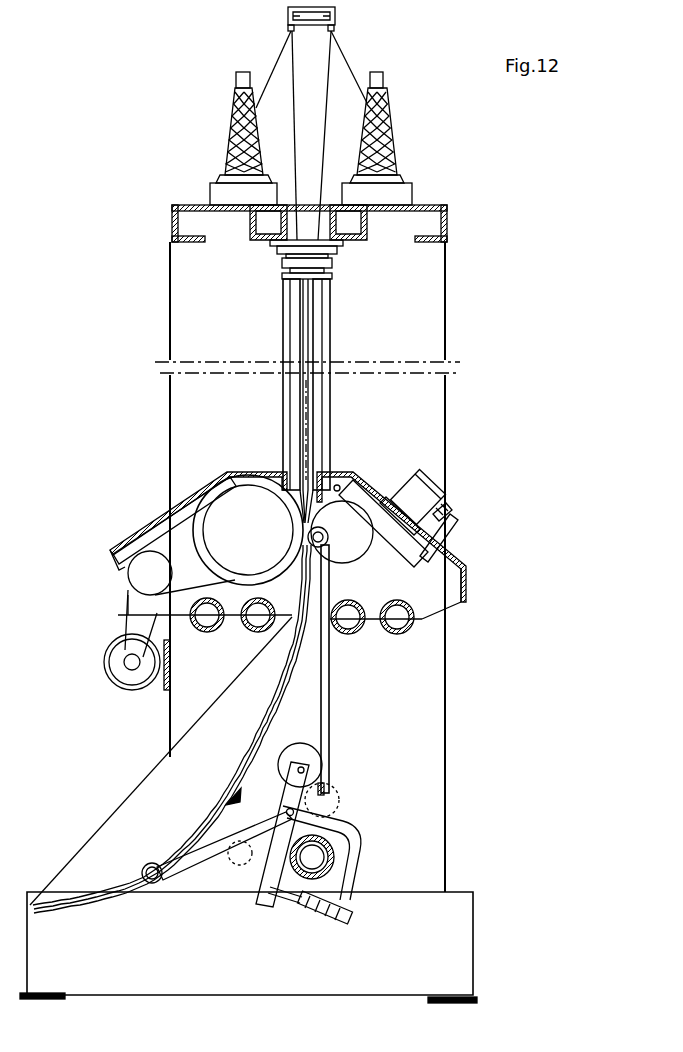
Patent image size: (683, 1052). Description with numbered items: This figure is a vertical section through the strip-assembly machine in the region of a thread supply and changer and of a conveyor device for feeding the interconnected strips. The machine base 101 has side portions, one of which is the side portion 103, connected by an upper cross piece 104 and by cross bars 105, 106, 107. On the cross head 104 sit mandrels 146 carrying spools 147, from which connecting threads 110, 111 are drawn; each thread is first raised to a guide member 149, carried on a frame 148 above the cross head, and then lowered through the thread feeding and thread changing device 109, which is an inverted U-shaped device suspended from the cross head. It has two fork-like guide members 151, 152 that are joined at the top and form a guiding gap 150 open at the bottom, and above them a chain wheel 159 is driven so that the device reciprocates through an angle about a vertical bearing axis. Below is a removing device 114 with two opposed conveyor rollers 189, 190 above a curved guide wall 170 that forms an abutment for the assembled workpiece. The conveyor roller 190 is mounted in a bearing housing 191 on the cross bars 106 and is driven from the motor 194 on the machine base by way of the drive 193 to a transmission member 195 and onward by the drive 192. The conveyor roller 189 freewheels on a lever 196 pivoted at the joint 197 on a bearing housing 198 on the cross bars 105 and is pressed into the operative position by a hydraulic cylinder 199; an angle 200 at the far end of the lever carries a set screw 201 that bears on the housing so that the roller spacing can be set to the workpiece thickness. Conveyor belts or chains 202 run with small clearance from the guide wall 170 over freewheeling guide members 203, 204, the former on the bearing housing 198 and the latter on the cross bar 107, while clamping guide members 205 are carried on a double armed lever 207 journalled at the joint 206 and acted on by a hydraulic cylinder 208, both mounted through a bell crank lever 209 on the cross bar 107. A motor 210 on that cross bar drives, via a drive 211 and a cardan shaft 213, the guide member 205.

The machine base 101 is at (452, 327).
The side portion 103 is at (430, 288).
The upper cross piece 104 is at (448, 226).
The cross bar 105 is at (396, 622).
The cross bar 106 is at (256, 620).
The cross bar 107 is at (335, 858).
The thread feeding and thread changing device 109 is at (340, 311).
The connecting thread 110 is at (293, 73).
The connecting thread 111 is at (331, 73).
The removing device 114 is at (470, 559).
The mandrel 146 is at (238, 80).
The spool 147 is at (228, 131).
The thread guide frame 148 is at (330, 7).
The guide member 149 is at (287, 27).
The guiding gap 150 is at (305, 410).
The guide member 151 is at (285, 346).
The guide member 152 is at (330, 351).
The chain wheel 159 is at (333, 263).
The guide wall 170 is at (182, 826).
The conveyor roller 189 is at (351, 514).
The conveyor roller 190 is at (250, 485).
The bearing housing 191 is at (200, 480).
The contact drive 192 is at (170, 535).
The contact drive 193 is at (125, 619).
The motor 194 is at (115, 660).
The transmission member 195 is at (143, 573).
The lever 196 is at (405, 560).
The joint 197 is at (338, 486).
The bearing housing 198 is at (468, 588).
The hydraulic cylinder 199 is at (425, 490).
The angle 200 is at (452, 540).
The set screw 201 is at (449, 513).
The conveyor belt or chain 202 is at (333, 670).
The guide member 203 is at (330, 546).
The guide member 204 is at (148, 883).
The guide member 205 is at (302, 744).
The joint 206 is at (282, 811).
The double armed lever 207 is at (267, 906).
The hydraulic cylinder 208 is at (326, 916).
The bell crank lever 209 is at (348, 828).
The motor 210 is at (232, 861).
The drive 211 is at (258, 873).
The cardan shaft 213 is at (325, 790).